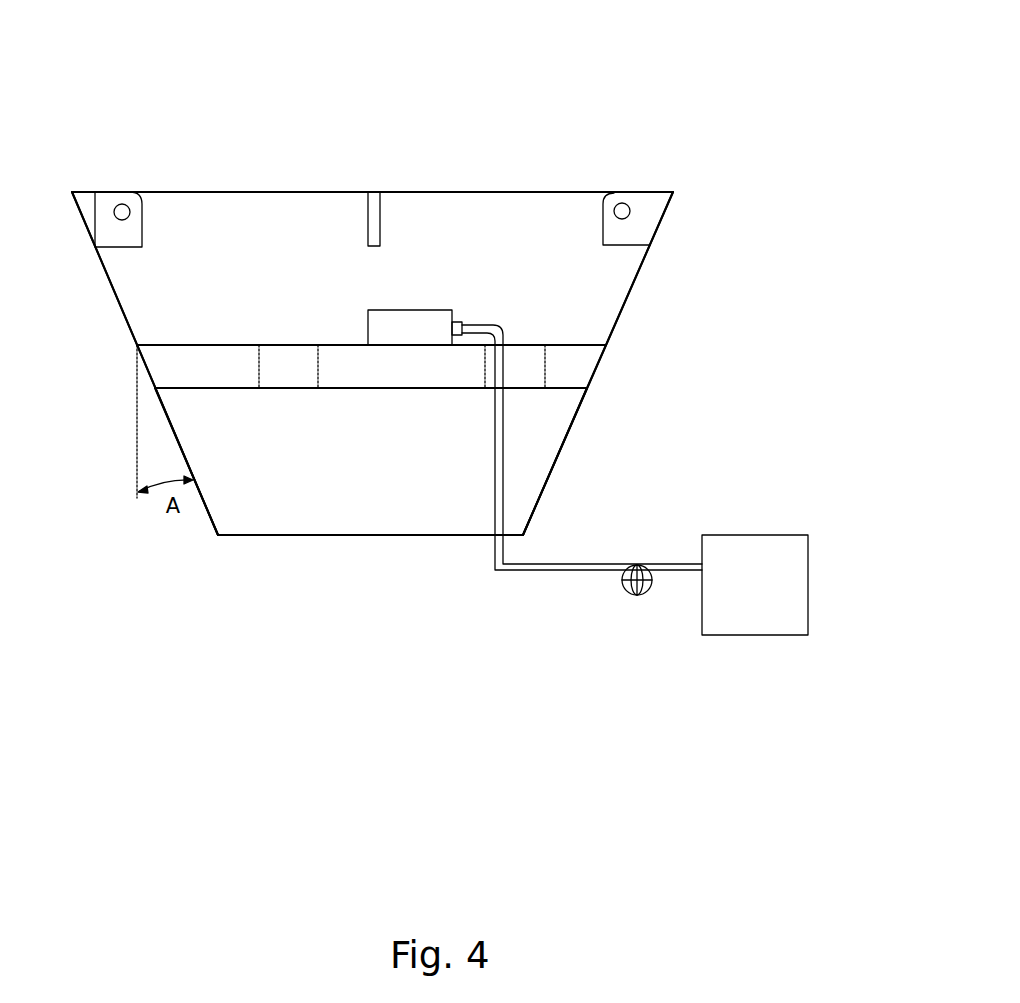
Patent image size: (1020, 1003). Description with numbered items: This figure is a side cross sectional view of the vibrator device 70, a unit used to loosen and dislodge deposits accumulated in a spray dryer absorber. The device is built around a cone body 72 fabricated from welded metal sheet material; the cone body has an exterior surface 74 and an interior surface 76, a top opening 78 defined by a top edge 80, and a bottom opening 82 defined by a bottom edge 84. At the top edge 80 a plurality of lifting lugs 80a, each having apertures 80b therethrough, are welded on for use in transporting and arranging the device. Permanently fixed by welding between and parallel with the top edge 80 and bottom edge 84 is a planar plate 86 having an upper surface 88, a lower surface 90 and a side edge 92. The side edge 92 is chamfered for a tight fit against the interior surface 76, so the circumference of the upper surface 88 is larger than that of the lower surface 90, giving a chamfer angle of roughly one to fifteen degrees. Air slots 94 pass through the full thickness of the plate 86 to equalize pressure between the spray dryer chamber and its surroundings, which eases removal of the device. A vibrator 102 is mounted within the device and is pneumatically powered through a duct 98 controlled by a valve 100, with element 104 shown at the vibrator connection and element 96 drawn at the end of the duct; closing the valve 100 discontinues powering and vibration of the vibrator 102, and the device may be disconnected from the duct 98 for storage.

The vibrator device 70 is at (607, 160).
The cone body 72 is at (638, 278).
The exterior surface 74 is at (570, 430).
The interior surface 76 is at (117, 295).
The top opening 78 is at (523, 195).
The top edge 80 is at (273, 191).
The lifting lugs 80a is at (87, 207).
The apertures 80b is at (120, 214).
The bottom opening 82 is at (280, 512).
The bottom edge 84 is at (433, 538).
The plate 86 is at (592, 354).
The upper surface 88 is at (203, 344).
The lower surface 90 is at (232, 388).
The side edge 92 is at (593, 380).
The air slots 94 is at (292, 355).
The pump 96 is at (753, 546).
The duct 98 is at (562, 563).
The valve 100 is at (638, 597).
The vibrator 102 is at (410, 310).
The connector 104 is at (457, 320).